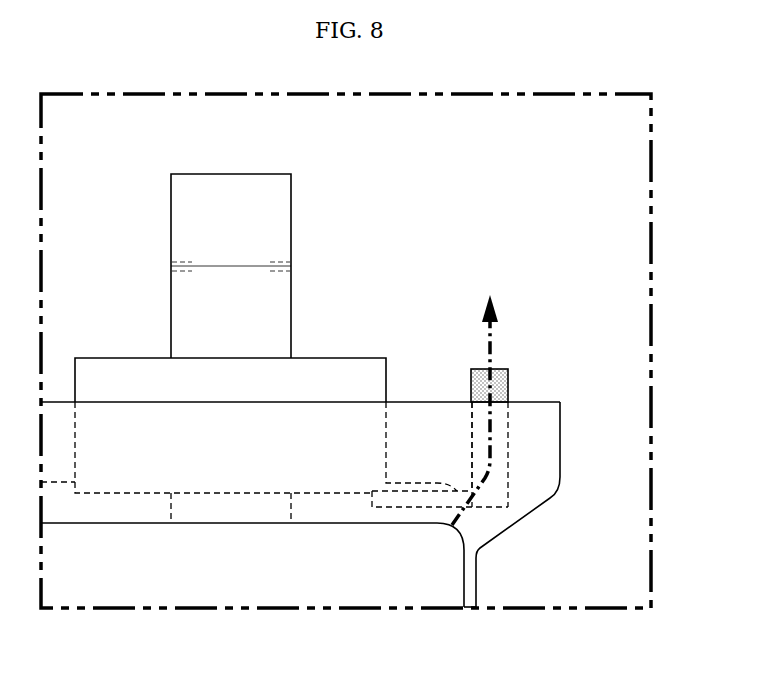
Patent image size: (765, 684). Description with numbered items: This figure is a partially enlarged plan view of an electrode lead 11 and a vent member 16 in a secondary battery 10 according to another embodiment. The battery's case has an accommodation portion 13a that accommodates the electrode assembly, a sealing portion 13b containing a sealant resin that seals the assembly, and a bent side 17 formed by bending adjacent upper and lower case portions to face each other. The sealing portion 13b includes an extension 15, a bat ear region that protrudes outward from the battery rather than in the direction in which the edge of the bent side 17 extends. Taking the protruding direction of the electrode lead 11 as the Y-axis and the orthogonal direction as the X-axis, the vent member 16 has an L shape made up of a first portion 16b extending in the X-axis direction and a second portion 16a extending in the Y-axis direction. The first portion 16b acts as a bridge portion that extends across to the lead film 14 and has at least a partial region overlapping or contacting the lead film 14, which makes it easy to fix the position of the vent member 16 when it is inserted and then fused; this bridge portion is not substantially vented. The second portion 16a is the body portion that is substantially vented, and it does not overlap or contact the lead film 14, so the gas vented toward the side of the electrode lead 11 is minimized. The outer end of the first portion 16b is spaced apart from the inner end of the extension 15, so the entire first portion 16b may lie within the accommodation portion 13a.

The secondary battery 10 is at (590, 162).
The electrode lead 11 is at (285, 282).
The accommodation portion 13a is at (452, 525).
The sealing portion 13b is at (423, 413).
The lead film 14 is at (328, 363).
The extension 15 is at (553, 498).
The vent member 16 is at (500, 370).
The second portion 16a is at (500, 432).
The first portion 16b is at (396, 502).
The bent side 17 is at (477, 598).